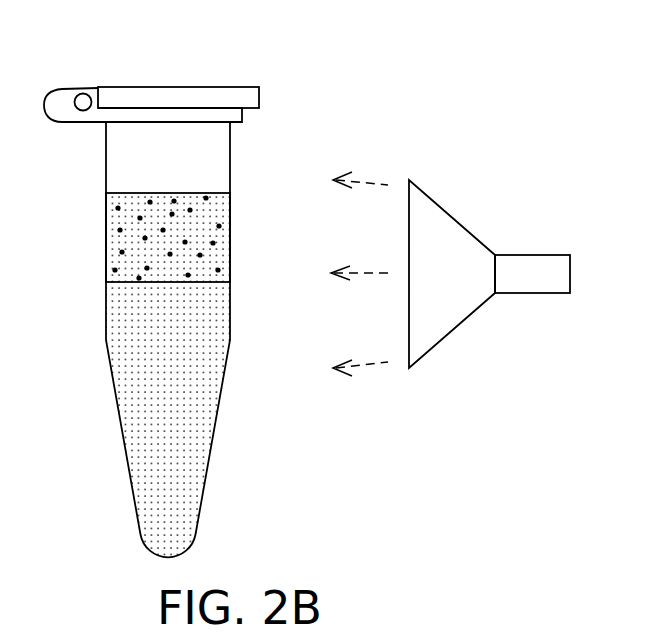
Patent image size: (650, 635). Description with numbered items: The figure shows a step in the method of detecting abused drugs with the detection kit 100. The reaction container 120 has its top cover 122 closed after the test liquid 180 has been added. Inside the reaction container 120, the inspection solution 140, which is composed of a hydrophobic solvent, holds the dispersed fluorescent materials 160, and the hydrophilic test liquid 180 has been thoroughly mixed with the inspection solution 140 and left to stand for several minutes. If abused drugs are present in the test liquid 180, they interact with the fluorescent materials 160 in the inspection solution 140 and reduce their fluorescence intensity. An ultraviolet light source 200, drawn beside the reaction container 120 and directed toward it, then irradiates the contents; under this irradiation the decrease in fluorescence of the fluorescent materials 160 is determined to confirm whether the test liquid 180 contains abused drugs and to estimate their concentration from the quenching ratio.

The detection kit 100 is at (403, 565).
The reaction container 120 is at (203, 502).
The top cover 122 is at (182, 98).
The inspection solution 140 is at (205, 260).
The fluorescent materials 160 is at (213, 243).
The test liquid 180 is at (180, 413).
The ultraviolet light source 200 is at (533, 255).